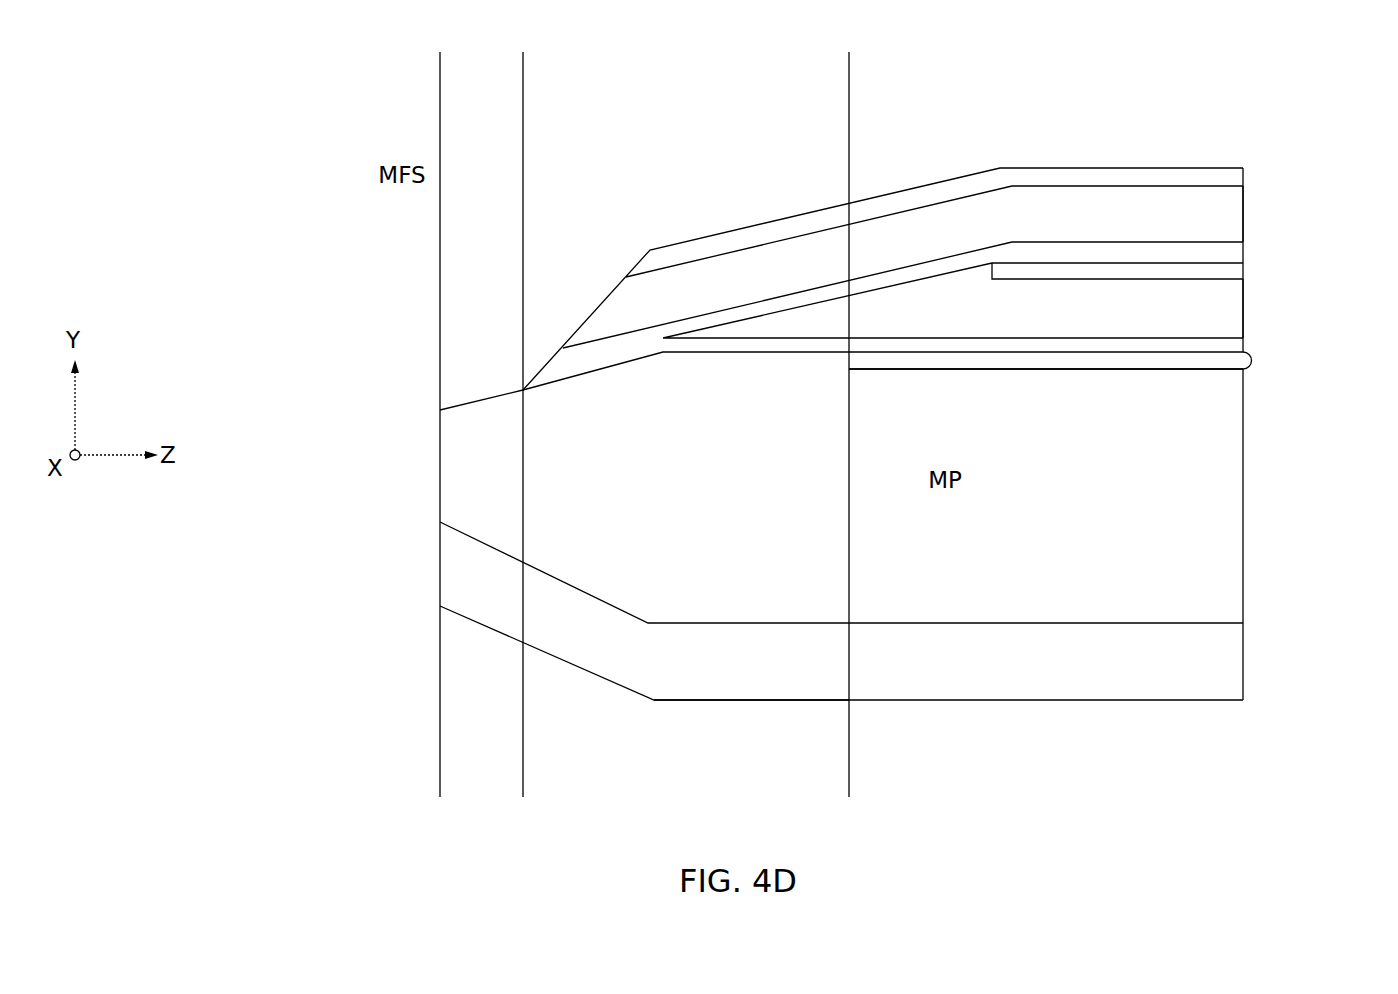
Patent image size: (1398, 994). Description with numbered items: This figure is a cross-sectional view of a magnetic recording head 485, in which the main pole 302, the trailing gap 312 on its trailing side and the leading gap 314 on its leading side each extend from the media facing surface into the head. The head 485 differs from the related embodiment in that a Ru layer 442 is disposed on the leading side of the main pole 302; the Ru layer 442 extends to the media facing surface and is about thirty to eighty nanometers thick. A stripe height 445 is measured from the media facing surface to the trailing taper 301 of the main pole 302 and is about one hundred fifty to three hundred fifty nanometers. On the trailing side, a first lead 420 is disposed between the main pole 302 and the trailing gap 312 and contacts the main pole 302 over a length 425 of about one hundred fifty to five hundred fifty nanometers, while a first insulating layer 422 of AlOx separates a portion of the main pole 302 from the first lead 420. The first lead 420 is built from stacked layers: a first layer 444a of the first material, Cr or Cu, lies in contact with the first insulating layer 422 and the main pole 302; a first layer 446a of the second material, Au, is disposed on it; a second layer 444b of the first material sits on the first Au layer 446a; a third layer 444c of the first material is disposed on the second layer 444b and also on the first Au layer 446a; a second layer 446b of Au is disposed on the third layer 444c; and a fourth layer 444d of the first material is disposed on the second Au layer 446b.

The magnetic recording head 485 is at (288, 106).
The length 425 is at (837, 97).
The first lead 420 is at (971, 147).
The fourth layer of the first material 444d is at (1233, 178).
The second layer of the second material 446b is at (1218, 220).
The third layer of the first material 444c is at (1230, 257).
The second layer of the first material 444b is at (1228, 268).
The first layer of the second material 446a is at (1218, 313).
The first layer of the first material 444a is at (1230, 346).
The first insulating layer 422 is at (1210, 361).
The trailing gap 312 is at (478, 235).
The stripe height 445 is at (651, 352).
The trailing taper 301 is at (670, 352).
The main pole 302 is at (905, 572).
The Ru layer 442 is at (1000, 665).
The leading gap 314 is at (721, 746).